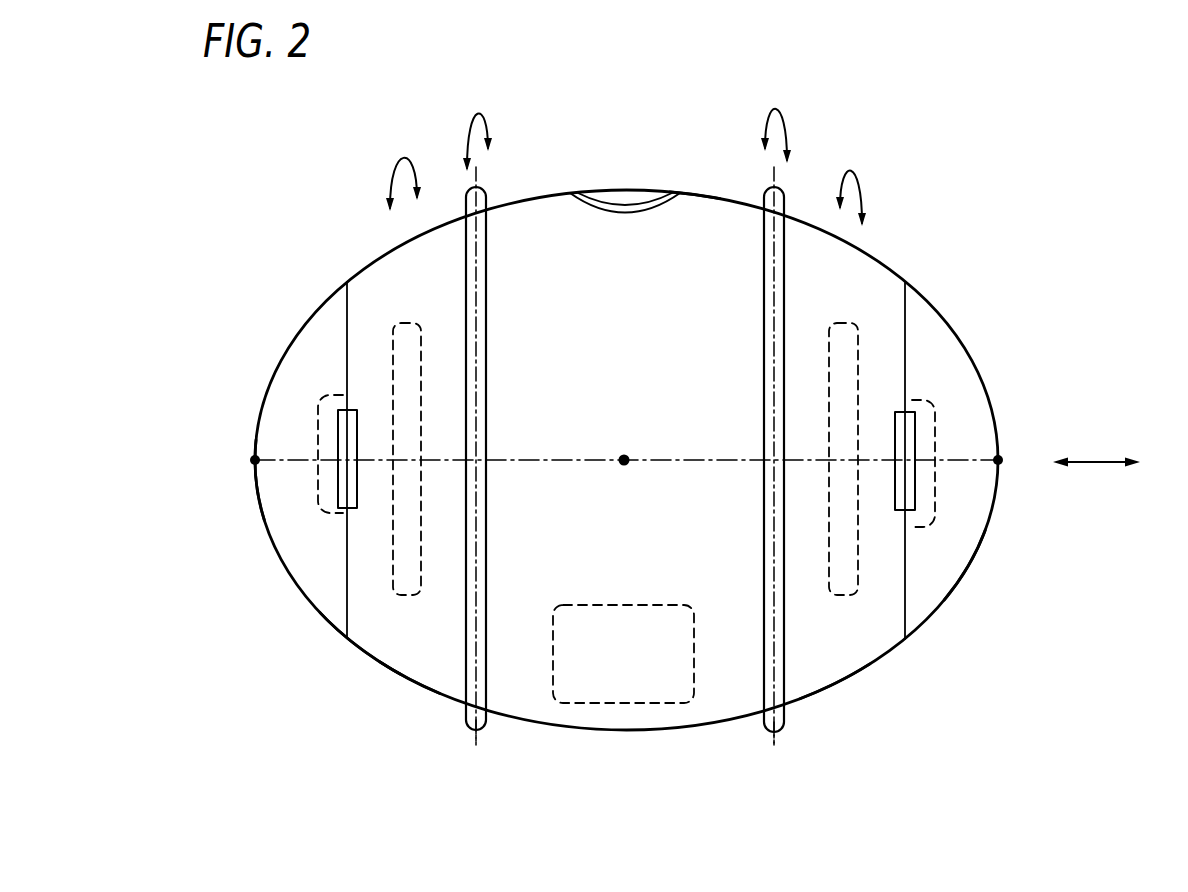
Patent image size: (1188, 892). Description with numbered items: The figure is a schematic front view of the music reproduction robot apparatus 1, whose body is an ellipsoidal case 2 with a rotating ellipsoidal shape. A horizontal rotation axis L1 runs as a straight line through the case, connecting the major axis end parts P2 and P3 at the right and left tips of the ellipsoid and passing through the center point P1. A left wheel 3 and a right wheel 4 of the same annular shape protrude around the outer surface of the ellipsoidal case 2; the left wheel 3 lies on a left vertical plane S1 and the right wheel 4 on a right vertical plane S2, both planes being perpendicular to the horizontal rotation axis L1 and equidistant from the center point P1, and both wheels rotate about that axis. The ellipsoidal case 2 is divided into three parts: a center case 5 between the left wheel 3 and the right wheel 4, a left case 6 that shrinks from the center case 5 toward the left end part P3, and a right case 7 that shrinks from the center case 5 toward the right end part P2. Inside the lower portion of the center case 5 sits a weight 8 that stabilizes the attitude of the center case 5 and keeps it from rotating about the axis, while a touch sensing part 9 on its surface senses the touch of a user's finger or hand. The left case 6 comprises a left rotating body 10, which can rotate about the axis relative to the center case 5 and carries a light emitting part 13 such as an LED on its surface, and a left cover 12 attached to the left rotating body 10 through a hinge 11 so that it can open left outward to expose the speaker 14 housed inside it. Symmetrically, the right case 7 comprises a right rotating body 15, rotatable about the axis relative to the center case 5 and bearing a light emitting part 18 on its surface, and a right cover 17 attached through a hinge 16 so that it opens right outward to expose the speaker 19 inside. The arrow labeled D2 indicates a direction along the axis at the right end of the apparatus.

The music reproduction robot apparatus 1 is at (316, 141).
The ellipsoidal case 2 is at (294, 676).
The left wheel 3 is at (488, 190).
The right wheel 4 is at (787, 191).
The center case 5 is at (689, 193).
The left case 6 is at (352, 265).
The right case 7 is at (931, 283).
The weight 8 is at (590, 705).
The touch sensing part 9 is at (657, 192).
The left rotating body 10 is at (403, 678).
The hinge 11 is at (338, 495).
The left cover 12 is at (258, 502).
The light emitting part 13 is at (392, 342).
The speaker 14 is at (316, 420).
The right rotating body 15 is at (833, 686).
The hinge 16 is at (900, 512).
The right cover 17 is at (967, 566).
The light emitting part 18 is at (846, 323).
The speaker 19 is at (936, 425).
The center point P1 is at (626, 463).
The right end part P2 is at (1001, 459).
The left end part P3 is at (254, 457).
The left vertical plane S1 is at (475, 738).
The right vertical plane S2 is at (774, 740).
The horizontal rotation axis L1 is at (953, 458).
The longitudinal direction D2 is at (1095, 464).